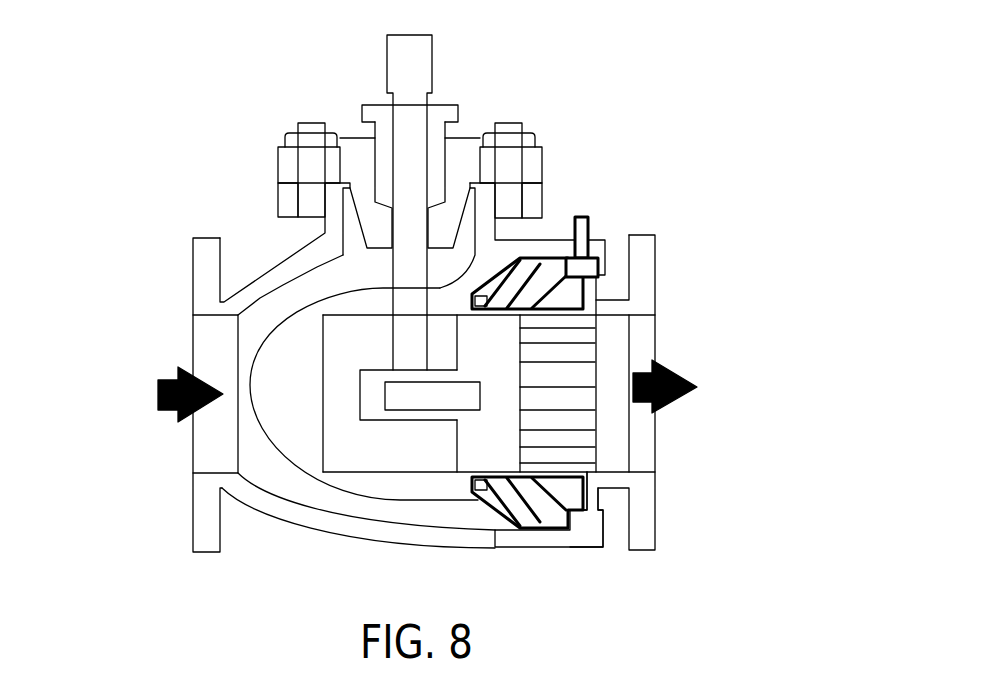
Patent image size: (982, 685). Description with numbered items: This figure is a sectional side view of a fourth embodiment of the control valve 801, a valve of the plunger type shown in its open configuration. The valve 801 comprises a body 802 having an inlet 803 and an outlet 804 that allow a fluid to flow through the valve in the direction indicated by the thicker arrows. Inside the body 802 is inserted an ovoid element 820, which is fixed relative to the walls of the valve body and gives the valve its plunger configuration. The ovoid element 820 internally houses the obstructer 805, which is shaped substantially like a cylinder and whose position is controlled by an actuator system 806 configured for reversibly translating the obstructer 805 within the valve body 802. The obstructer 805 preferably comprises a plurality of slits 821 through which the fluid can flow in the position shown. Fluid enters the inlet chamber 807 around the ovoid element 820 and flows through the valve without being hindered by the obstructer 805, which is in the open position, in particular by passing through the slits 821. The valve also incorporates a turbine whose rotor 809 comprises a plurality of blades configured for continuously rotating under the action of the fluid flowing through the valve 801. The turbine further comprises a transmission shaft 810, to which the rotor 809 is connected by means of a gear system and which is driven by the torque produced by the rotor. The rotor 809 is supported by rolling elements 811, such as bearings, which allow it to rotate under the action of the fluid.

The control valve 801 is at (583, 84).
The valve body 802 is at (281, 243).
The inlet 803 is at (215, 353).
The outlet 804 is at (637, 350).
The obstructer 805 is at (478, 445).
The actuator system 806 is at (418, 142).
The inlet chamber 807 is at (403, 522).
The rotor 809 is at (587, 497).
The transmission shaft 810 is at (590, 233).
The rolling elements 811 is at (500, 303).
The ovoid element 820 is at (303, 425).
The slits 821 is at (563, 350).